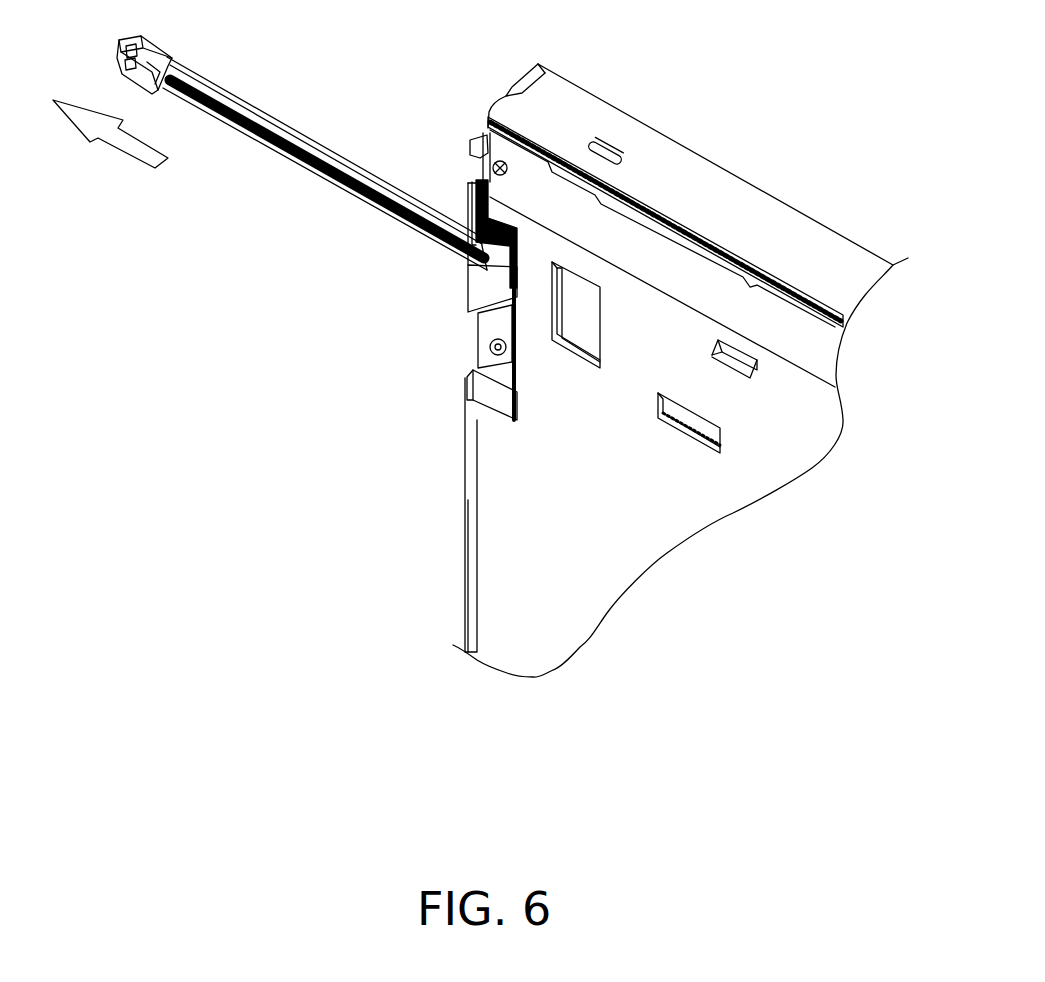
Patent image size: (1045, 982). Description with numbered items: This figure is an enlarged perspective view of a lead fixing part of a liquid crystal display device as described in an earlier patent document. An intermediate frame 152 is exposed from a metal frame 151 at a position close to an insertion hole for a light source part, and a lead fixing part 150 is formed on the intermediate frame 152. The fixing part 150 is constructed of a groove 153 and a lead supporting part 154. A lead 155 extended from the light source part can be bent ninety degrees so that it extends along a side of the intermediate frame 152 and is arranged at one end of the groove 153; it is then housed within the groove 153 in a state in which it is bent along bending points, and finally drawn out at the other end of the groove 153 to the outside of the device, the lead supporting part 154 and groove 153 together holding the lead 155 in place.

The lead fixing part 150 is at (453, 262).
The metal frame 151 is at (768, 467).
The intermediate frame 152 is at (690, 238).
The groove 153 is at (468, 192).
The lead supporting part 154 is at (475, 265).
The lead 155 is at (327, 180).